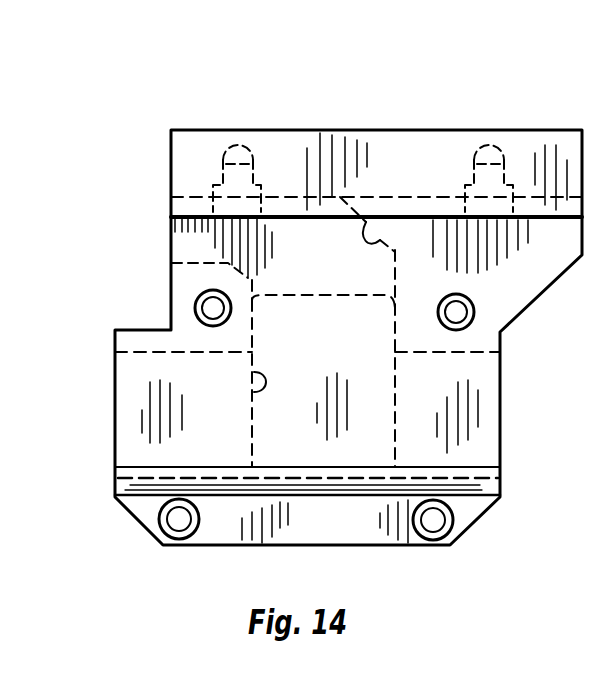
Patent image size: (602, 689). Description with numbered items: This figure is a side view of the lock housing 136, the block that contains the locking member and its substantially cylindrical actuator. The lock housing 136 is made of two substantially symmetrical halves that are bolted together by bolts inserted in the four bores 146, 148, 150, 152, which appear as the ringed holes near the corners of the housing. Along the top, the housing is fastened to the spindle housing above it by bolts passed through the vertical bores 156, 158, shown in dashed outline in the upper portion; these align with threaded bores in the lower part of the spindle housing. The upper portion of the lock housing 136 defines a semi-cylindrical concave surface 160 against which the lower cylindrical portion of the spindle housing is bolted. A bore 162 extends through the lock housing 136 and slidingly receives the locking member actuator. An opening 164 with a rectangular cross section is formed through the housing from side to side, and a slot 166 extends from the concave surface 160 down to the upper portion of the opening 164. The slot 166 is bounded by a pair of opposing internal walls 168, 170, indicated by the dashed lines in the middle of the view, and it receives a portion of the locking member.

The lock housing 136 is at (315, 122).
The bore 146 is at (205, 305).
The bore 148 is at (462, 312).
The bore 150 is at (436, 524).
The bore 152 is at (180, 519).
The vertical bore 156 is at (228, 158).
The vertical bore 158 is at (500, 172).
The semi-cylindrical concave surface 160 is at (201, 197).
The bore 162 is at (468, 355).
The opening 164 is at (254, 377).
The slot 166 is at (203, 263).
The internal wall 168 is at (252, 285).
The internal wall 170 is at (367, 221).